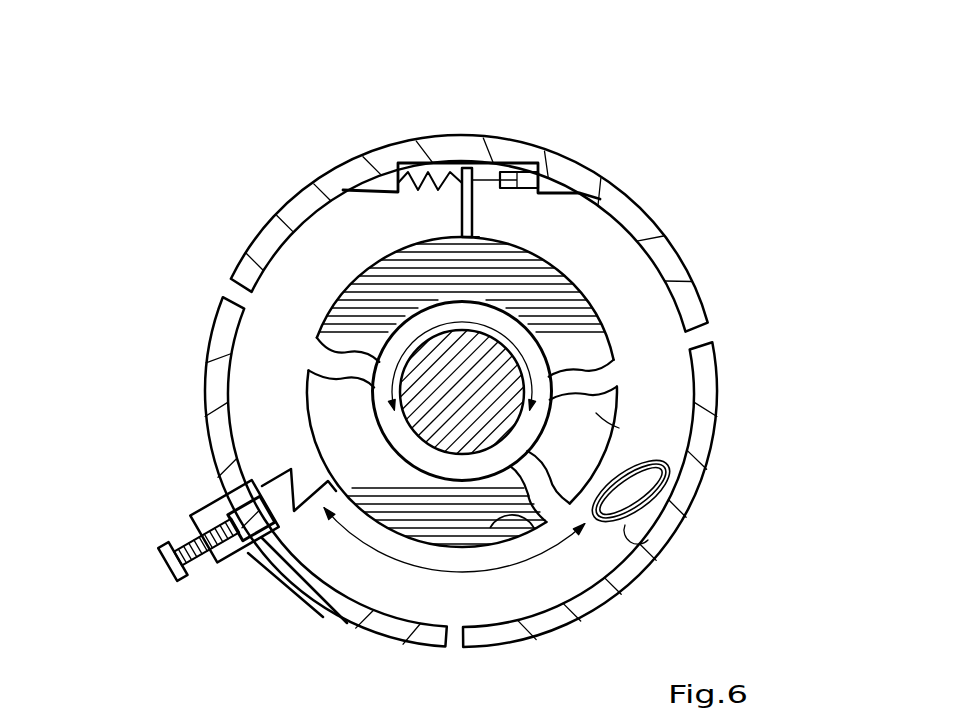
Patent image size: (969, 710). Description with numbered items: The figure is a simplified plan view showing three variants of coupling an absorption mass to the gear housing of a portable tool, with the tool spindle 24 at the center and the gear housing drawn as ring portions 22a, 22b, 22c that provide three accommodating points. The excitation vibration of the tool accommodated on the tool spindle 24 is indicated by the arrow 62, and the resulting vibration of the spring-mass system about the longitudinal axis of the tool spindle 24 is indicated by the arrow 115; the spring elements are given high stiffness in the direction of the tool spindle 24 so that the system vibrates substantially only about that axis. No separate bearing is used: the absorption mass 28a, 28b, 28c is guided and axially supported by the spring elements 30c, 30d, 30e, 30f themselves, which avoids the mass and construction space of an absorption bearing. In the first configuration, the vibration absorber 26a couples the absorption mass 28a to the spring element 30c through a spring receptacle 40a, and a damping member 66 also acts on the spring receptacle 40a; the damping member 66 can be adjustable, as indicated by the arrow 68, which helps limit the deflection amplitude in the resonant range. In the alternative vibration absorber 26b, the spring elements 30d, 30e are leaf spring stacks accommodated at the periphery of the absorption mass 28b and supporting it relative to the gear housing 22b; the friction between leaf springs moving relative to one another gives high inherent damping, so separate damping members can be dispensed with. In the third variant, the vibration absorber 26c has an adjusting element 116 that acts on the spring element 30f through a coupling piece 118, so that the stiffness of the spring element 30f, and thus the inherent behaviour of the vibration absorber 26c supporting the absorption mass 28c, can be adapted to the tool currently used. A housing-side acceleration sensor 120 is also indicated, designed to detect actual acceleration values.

The gear housing 22a is at (605, 197).
The gear housing 22b is at (693, 475).
The gear housing 22c is at (223, 343).
The tool spindle 24 is at (437, 372).
The excitation vibration arrow 62 is at (518, 350).
The vibration absorber 26a is at (655, 115).
The vibration absorber 26b is at (742, 502).
The vibration absorber 26c is at (195, 302).
The absorption mass 28a is at (567, 283).
The absorption mass 28b is at (647, 413).
The absorption mass 28c is at (520, 522).
The spring element 30c is at (415, 175).
The spring element 30d is at (645, 467).
The spring element 30e is at (636, 534).
The spring element 30f is at (318, 490).
The spring receptacle 40a is at (460, 220).
The damping member 66 is at (493, 210).
The adjusting element arrow 68 is at (540, 148).
The vibration arrow 115 is at (402, 560).
The adjusting element 116 is at (200, 557).
The coupling piece 118 is at (258, 494).
The acceleration sensor 120 is at (403, 709).